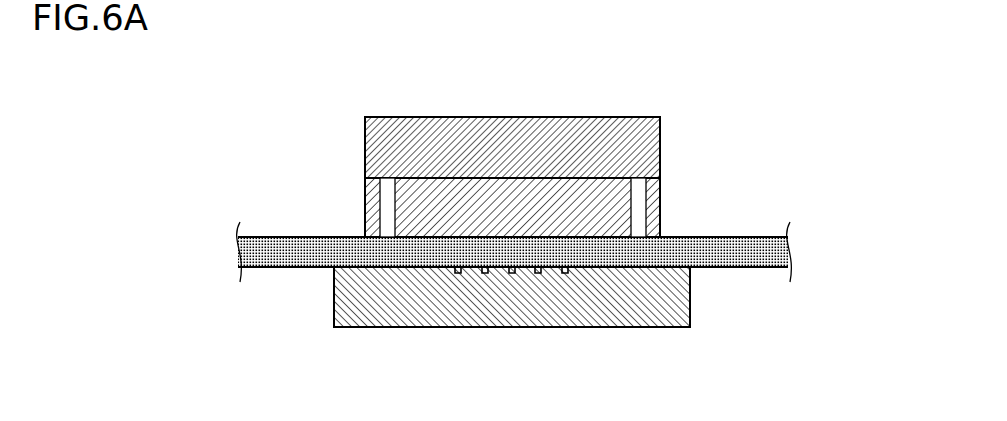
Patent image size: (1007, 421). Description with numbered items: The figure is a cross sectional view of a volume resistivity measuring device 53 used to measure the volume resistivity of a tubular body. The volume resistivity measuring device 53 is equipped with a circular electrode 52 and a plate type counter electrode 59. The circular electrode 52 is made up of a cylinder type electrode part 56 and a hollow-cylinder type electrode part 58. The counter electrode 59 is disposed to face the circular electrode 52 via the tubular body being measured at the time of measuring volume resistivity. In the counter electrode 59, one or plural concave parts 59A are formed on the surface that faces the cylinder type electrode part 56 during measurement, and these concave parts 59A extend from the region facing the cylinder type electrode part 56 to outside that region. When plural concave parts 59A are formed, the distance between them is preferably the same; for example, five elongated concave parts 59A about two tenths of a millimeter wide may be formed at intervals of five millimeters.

The volume resistivity measuring device 53 is at (724, 72).
The circular electrode 52 is at (565, 123).
The cylinder type electrode part 56 is at (600, 195).
The hollow-cylinder type electrode part 58 is at (661, 188).
The counter electrode 59 is at (658, 315).
The concave parts 59A is at (512, 273).